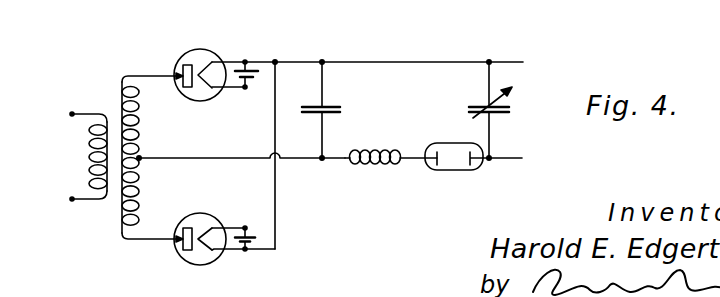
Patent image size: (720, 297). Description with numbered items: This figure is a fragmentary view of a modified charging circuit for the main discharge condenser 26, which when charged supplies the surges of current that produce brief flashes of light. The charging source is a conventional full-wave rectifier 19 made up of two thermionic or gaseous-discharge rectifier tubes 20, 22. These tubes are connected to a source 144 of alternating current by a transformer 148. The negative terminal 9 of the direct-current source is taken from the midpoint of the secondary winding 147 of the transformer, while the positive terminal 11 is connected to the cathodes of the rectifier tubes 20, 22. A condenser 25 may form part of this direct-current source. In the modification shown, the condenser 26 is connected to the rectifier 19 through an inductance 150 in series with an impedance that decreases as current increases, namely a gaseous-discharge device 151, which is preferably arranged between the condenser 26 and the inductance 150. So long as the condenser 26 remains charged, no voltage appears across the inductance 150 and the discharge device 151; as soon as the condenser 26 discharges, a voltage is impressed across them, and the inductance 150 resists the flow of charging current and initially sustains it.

The negative terminal 9 is at (143, 151).
The positive terminal 11 is at (276, 56).
The full-wave rectifier 19 is at (242, 167).
The rectifier tube 20 is at (203, 50).
The rectifier tube 22 is at (200, 265).
The condenser 25 is at (325, 103).
The main discharge condenser 26 is at (509, 107).
The source of alternating current 144 is at (85, 116).
The secondary winding 147 is at (141, 199).
The transformer 148 is at (118, 167).
The inductance 150 is at (372, 170).
The gaseous-discharge device 151 is at (455, 172).